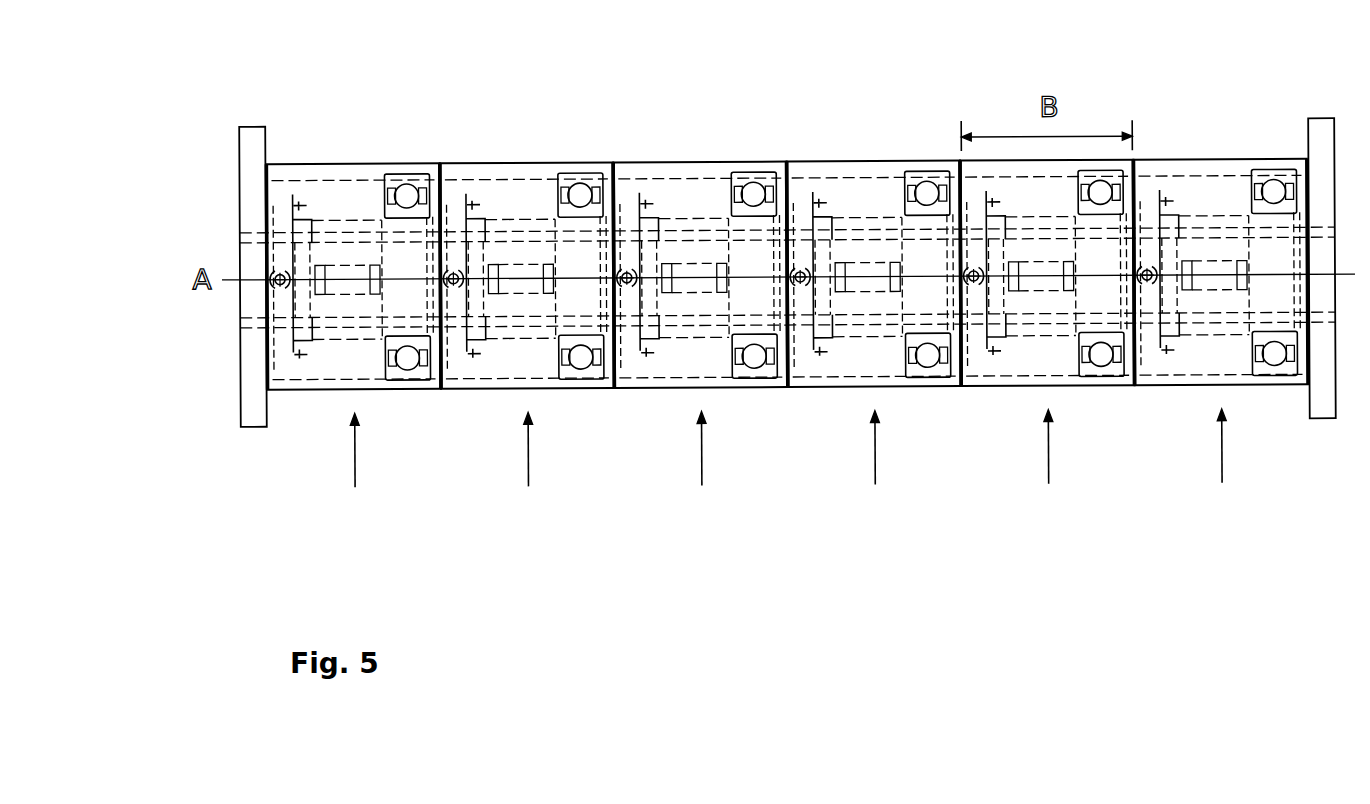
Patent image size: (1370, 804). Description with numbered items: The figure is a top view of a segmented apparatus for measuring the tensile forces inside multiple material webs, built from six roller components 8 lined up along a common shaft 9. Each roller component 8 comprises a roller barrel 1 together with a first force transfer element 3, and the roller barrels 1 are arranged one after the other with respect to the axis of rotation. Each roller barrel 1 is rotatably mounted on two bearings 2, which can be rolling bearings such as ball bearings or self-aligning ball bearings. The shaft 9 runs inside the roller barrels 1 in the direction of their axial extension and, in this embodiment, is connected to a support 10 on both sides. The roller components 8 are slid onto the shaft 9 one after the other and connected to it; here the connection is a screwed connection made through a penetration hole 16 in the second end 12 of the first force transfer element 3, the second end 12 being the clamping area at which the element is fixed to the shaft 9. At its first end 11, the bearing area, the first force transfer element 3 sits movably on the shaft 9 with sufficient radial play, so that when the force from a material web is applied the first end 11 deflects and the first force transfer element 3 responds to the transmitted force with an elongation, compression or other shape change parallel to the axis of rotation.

The roller barrel 1 is at (300, 387).
The bearings 2 is at (755, 190).
The first force transfer element 3 is at (755, 255).
The roller components 8 is at (788, 467).
The shaft 9 is at (342, 250).
The support 10 is at (256, 148).
The first end 11 is at (743, 245).
The second end 12 is at (627, 243).
The penetration hole 16 is at (625, 275).